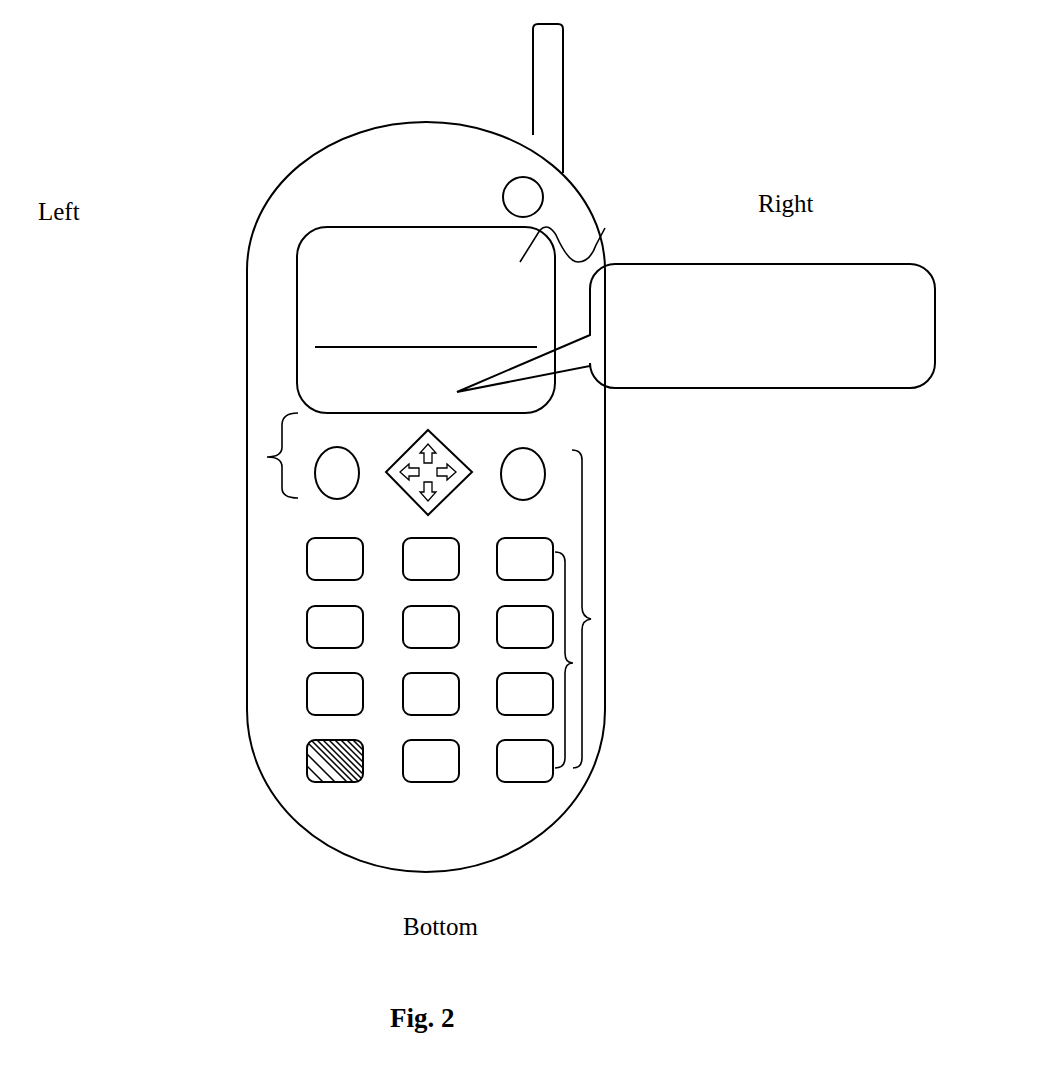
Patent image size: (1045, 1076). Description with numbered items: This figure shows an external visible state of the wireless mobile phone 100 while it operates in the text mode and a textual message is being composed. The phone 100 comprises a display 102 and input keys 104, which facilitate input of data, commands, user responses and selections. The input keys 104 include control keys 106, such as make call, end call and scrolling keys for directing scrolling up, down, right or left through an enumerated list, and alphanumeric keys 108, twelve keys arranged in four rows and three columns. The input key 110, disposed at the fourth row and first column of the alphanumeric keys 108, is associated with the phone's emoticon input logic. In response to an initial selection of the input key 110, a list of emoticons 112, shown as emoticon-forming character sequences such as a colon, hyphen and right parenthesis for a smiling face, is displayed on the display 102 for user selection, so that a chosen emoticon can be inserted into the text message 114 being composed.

The wireless mobile phone 100 is at (152, 371).
The display 102 is at (377, 217).
The input keys 104 is at (591, 619).
The control keys 106 is at (253, 457).
The alphanumeric keys 108 is at (573, 663).
The input key 110 is at (353, 778).
The list of emoticons 112 is at (703, 390).
The text message 114 is at (580, 240).